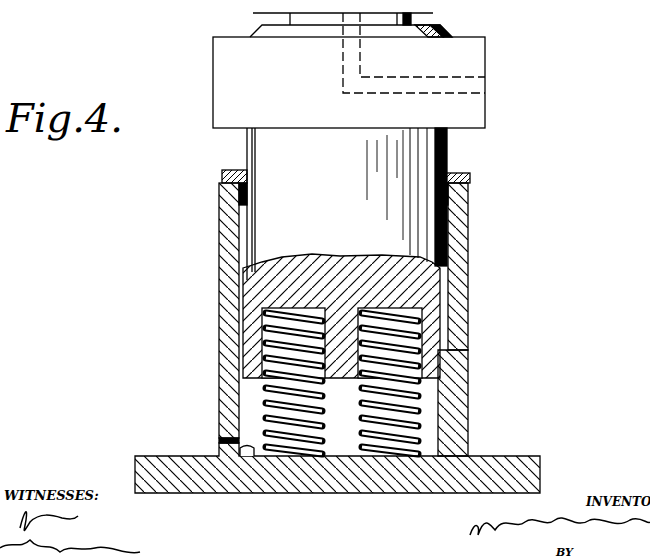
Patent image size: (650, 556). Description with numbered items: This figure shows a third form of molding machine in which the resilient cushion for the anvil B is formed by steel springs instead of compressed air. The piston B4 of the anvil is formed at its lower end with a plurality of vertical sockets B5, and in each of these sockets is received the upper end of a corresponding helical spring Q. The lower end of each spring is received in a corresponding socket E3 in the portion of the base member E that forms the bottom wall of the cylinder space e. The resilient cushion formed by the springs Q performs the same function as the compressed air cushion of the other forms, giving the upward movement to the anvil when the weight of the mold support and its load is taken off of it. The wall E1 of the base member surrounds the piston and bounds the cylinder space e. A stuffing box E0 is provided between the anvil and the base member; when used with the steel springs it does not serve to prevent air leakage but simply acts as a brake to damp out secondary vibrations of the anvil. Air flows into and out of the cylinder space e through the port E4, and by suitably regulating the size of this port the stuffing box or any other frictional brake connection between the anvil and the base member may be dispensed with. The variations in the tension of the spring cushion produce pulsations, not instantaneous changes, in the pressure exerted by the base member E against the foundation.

The anvil B is at (349, 70).
The piston of the anvil B4 is at (347, 204).
The vertical sockets B5 is at (378, 300).
The stuffing box E0 is at (449, 174).
The casing wall E1 is at (240, 396).
The port E4 is at (216, 453).
The base member E is at (162, 468).
The socket E3 is at (263, 449).
The helical spring Q is at (377, 410).
The cylinder space e is at (441, 409).